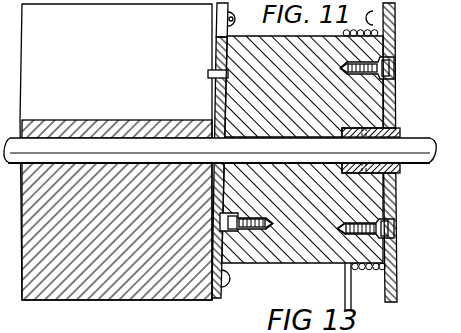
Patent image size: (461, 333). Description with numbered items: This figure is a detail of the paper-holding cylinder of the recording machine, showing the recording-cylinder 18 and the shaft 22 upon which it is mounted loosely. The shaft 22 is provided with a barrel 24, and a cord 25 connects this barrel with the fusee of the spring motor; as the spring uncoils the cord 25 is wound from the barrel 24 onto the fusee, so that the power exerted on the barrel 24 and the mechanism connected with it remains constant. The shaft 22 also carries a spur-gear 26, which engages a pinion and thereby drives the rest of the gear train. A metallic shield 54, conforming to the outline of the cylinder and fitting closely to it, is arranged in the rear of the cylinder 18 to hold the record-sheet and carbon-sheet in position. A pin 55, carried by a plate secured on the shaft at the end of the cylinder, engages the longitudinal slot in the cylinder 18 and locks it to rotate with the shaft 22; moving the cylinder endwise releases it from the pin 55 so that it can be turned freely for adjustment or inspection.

The recording-cylinder 18 is at (80, 288).
The shaft 22 is at (100, 153).
The barrel 24 is at (307, 255).
The cord 25 is at (345, 285).
The spur-gear 26 is at (395, 23).
The metallic shield 54 is at (223, 43).
The pin 55 is at (213, 70).